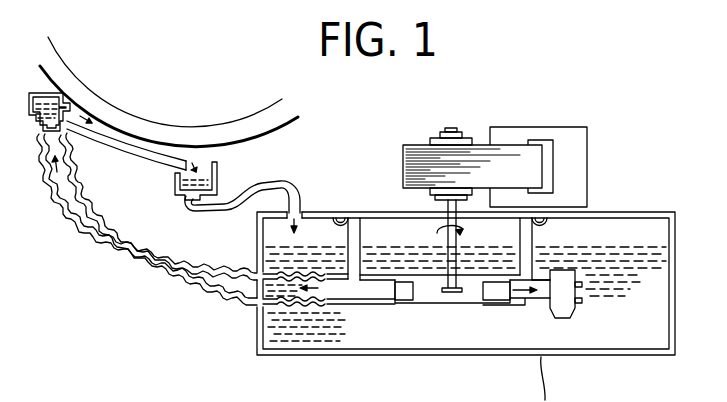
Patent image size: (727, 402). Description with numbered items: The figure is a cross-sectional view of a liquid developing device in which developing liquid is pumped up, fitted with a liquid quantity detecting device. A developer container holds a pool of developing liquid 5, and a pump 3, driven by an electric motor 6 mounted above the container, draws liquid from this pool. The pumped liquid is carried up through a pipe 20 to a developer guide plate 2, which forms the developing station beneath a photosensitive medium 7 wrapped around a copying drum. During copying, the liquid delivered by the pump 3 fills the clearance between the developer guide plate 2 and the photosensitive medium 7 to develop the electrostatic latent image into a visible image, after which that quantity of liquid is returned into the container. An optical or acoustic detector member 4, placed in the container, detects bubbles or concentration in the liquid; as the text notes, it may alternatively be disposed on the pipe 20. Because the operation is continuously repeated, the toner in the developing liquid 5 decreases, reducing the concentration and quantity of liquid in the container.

The photosensitive medium 7 is at (181, 130).
The developer guide plate 2 is at (125, 153).
The developing liquid 5 is at (494, 342).
The pipe 20 is at (343, 302).
The pump 3 is at (415, 287).
The detector member 4 is at (581, 272).
The electric motor 6 is at (481, 140).